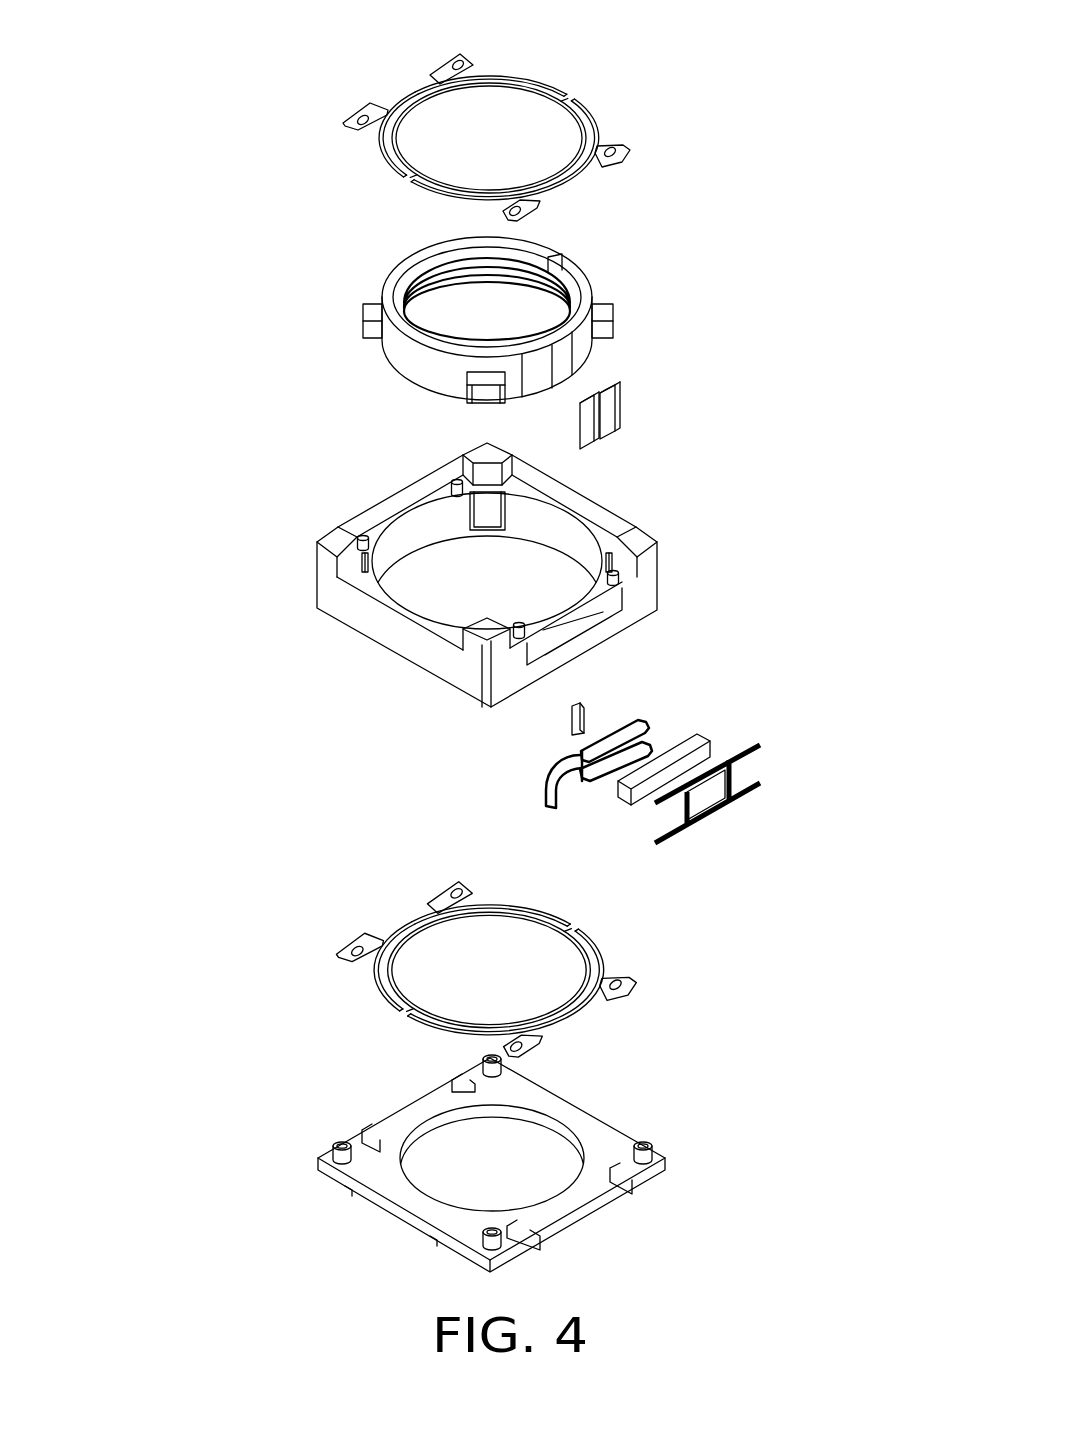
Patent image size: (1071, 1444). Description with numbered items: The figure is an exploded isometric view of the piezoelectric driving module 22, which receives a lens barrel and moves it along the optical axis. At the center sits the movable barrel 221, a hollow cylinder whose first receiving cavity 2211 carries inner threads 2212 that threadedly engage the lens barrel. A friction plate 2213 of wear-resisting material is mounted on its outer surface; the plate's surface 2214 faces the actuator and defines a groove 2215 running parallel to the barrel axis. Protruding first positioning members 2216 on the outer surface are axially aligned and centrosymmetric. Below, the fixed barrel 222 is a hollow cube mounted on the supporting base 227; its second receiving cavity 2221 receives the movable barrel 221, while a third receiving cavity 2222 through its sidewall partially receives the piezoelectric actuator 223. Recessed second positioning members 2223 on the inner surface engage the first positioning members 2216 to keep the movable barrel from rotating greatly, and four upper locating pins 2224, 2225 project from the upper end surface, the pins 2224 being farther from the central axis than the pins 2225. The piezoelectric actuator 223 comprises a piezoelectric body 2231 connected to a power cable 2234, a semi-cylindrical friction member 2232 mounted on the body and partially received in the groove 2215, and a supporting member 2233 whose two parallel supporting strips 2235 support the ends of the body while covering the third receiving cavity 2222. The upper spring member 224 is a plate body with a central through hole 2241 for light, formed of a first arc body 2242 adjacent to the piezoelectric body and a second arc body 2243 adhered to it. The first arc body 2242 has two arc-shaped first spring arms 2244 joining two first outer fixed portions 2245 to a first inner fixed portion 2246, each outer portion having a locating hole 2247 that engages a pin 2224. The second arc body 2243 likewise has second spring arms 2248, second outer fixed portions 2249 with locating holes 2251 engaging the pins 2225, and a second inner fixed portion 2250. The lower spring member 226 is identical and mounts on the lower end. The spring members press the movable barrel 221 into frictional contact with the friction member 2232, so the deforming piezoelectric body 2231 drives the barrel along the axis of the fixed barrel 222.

The piezoelectric driving module 22 is at (138, 53).
The movable barrel 221 is at (342, 329).
The first receiving cavity 2211 is at (458, 322).
The inner threads 2212 is at (413, 285).
The friction plate 2213 is at (768, 365).
The surface 2214 is at (613, 405).
The groove 2215 is at (602, 428).
The first positioning members 2216 is at (605, 310).
The fixed barrel 222 is at (292, 549).
The second receiving cavity 2221 is at (535, 572).
The third receiving cavity 2222 is at (602, 618).
The second positioning members 2223 is at (483, 512).
The upper locating pins 2224 is at (612, 582).
The upper locating pins 2225 is at (457, 479).
The piezoelectric actuator 223 is at (707, 724).
The piezoelectric body 2231 is at (623, 797).
The friction member 2232 is at (585, 708).
The supporting member 2233 is at (855, 750).
The power cable 2234 is at (563, 770).
The supporting strips 2235 is at (733, 770).
The upper spring member 224 is at (598, 92).
The through hole 2241 is at (479, 105).
The first arc body 2242 is at (622, 171).
The second arc body 2243 is at (360, 97).
The first spring arms 2244 is at (514, 166).
The first outer fixed portions 2245 is at (663, 160).
The first inner fixed portion 2246 is at (571, 157).
The locating holes 2247 is at (585, 223).
The second spring arms 2248 is at (325, 138).
The second outer fixed portions 2249 is at (314, 105).
The second inner fixed portion 2250 is at (402, 68).
The locating holes 2251 is at (514, 47).
The lower spring member 226 is at (580, 948).
The supporting base 227 is at (588, 1137).